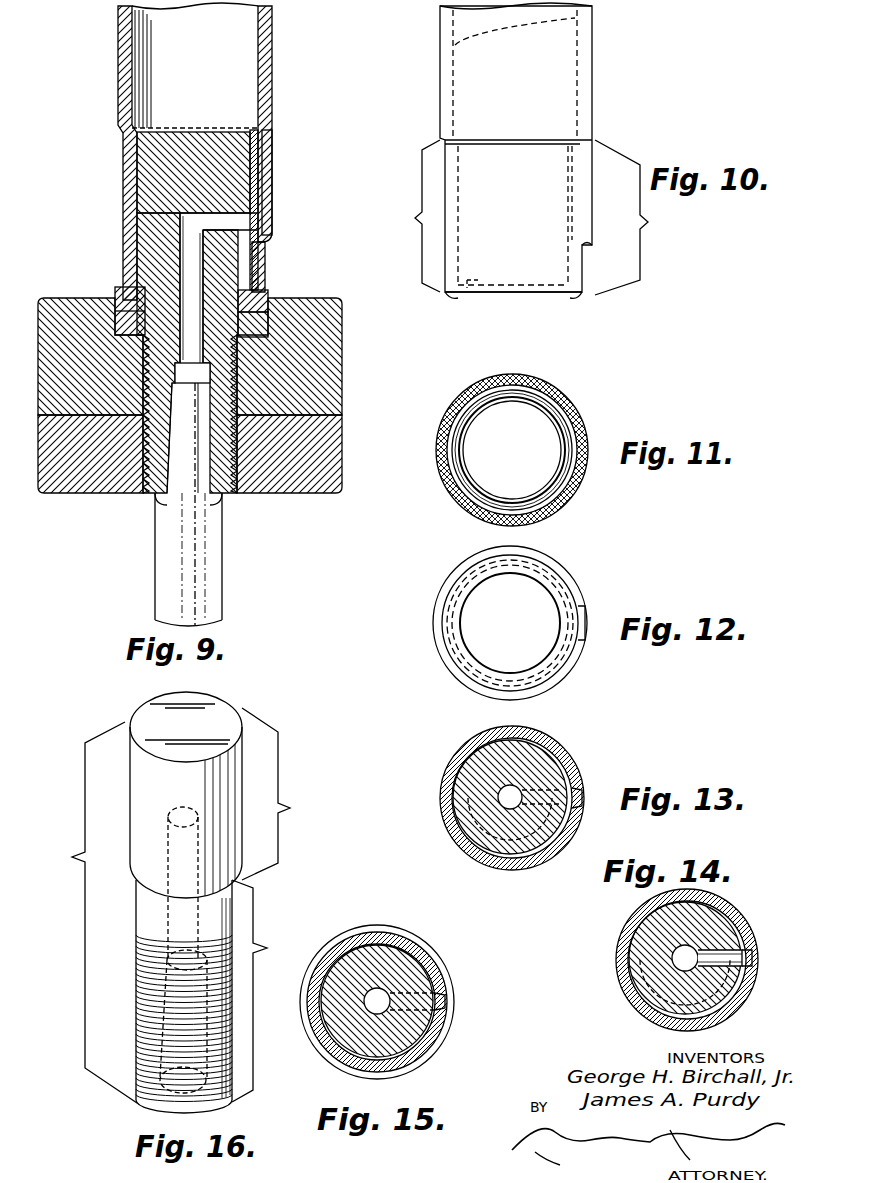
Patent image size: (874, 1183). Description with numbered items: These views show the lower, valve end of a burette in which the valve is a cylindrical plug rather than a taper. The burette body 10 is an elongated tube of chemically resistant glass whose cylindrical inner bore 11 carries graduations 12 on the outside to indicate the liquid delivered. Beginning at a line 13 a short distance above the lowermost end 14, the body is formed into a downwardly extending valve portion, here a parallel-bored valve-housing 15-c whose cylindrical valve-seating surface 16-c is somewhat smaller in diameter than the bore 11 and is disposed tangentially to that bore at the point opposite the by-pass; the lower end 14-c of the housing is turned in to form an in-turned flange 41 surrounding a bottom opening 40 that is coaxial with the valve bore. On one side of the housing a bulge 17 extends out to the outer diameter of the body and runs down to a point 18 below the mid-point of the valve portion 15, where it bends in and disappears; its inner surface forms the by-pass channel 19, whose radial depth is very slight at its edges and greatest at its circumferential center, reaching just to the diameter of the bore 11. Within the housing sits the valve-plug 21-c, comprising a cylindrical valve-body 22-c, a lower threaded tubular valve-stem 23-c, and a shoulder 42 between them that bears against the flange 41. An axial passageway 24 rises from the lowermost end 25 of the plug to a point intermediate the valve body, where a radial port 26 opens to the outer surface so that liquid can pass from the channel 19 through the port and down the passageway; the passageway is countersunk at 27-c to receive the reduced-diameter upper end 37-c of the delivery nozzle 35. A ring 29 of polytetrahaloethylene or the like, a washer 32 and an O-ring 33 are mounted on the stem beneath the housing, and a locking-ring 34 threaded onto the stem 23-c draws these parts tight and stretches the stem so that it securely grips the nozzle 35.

In FIG. 9, the burette body 10 is at (272, 50).
In FIG. 10, the burette body 10 is at (594, 24).
In FIG. 11, the burette body 10 is at (560, 392).
In FIG. 12, the burette body 10 is at (566, 570).
In FIG. 9, the inner bore 11 is at (258, 34).
In FIG. 10, the inner bore 11 is at (618, 90).
In FIG. 11, the inner bore 11 is at (470, 405).
In FIG. 9, the line 13 is at (205, 132).
In FIG. 10, the line 13 is at (528, 135).
In FIG. 9, the lowermost end 14 is at (80, 232).
In FIG. 9, the downwardly-tapered portion 15 is at (108, 252).
In FIG. 9, the bulge 17 is at (272, 200).
In FIG. 10, the bulge 17 is at (594, 207).
In FIG. 12, the bulge 17 is at (585, 610).
In FIG. 13, the bulge 17 is at (578, 795).
In FIG. 14, the bulge 17 is at (748, 960).
In FIG. 15, the bulge 17 is at (448, 1004).
In FIG. 9, the point 18 is at (268, 240).
In FIG. 10, the point 18 is at (585, 251).
In FIG. 9, the by-pass channel 19 is at (255, 150).
In FIG. 10, the by-pass channel 19 is at (573, 168).
In FIG. 11, the by-pass channel 19 is at (572, 450).
In FIG. 13, the by-pass channel 19 is at (572, 818).
In FIG. 14, the by-pass channel 19 is at (750, 980).
In FIG. 9, the valve-plug 21-c is at (150, 140).
In FIG. 16, the valve-plug 21-c is at (81, 912).
In FIG. 16, the cylindrical valve-body 22-c is at (229, 795).
In FIG. 9, the tubular valve-stem 23-c is at (237, 401).
In FIG. 16, the tubular valve-stem 23-c is at (218, 996).
In FIG. 9, the axial passageway 24 is at (195, 347).
In FIG. 14, the axial passageway 24 is at (678, 968).
In FIG. 15, the axial passageway 24 is at (380, 1010).
In FIG. 16, the axial passageway 24 is at (170, 923).
In FIG. 16, the lowermost end of valve-plug 25 is at (140, 1102).
In FIG. 9, the radial port 26 is at (230, 218).
In FIG. 14, the radial port 26 is at (735, 997).
In FIG. 15, the radial port 26 is at (452, 1044).
In FIG. 16, the radial port 26 is at (198, 810).
In FIG. 9, the countersink 27-c is at (165, 500).
In FIG. 16, the countersink 27-c is at (145, 1031).
In FIG. 9, the ring 29 is at (325, 378).
In FIG. 9, the washer 32 is at (268, 298).
In FIG. 9, the O-ring 33 is at (250, 332).
In FIG. 9, the locking-ring 34 is at (320, 449).
In FIG. 9, the delivery nozzle 35 is at (215, 555).
In FIG. 9, the reduced-diameter upper end of nozzle 37-c is at (200, 508).
In FIG. 10, the bottom opening 40 is at (480, 284).
In FIG. 11, the bottom opening 40 is at (466, 466).
In FIG. 12, the bottom opening 40 is at (462, 612).
In FIG. 9, the in-turned flange 41 is at (262, 290).
In FIG. 10, the in-turned flange 41 is at (578, 298).
In FIG. 9, the shoulder 42 is at (125, 300).
In FIG. 10, the graduations 12 is at (616, 300).
In FIG. 10, the lower end of valve-housing 14-c is at (568, 293).
In FIG. 10, the valve-housing 15-c is at (528, 217).
In FIG. 13, the valve-housing 15-c is at (540, 742).
In FIG. 14, the valve-housing 15-c is at (625, 936).
In FIG. 9, the cylindrical valve-seating surface 16-c is at (187, 353).
In FIG. 10, the cylindrical valve-seating surface 16-c is at (567, 170).
In FIG. 11, the cylindrical valve-seating surface 16-c is at (470, 424).
In FIG. 13, the cylindrical valve-seating surface 16-c is at (480, 750).
In FIG. 14, the cylindrical valve-seating surface 16-c is at (627, 953).
In FIG. 15, the cylindrical valve-seating surface 16-c is at (400, 958).